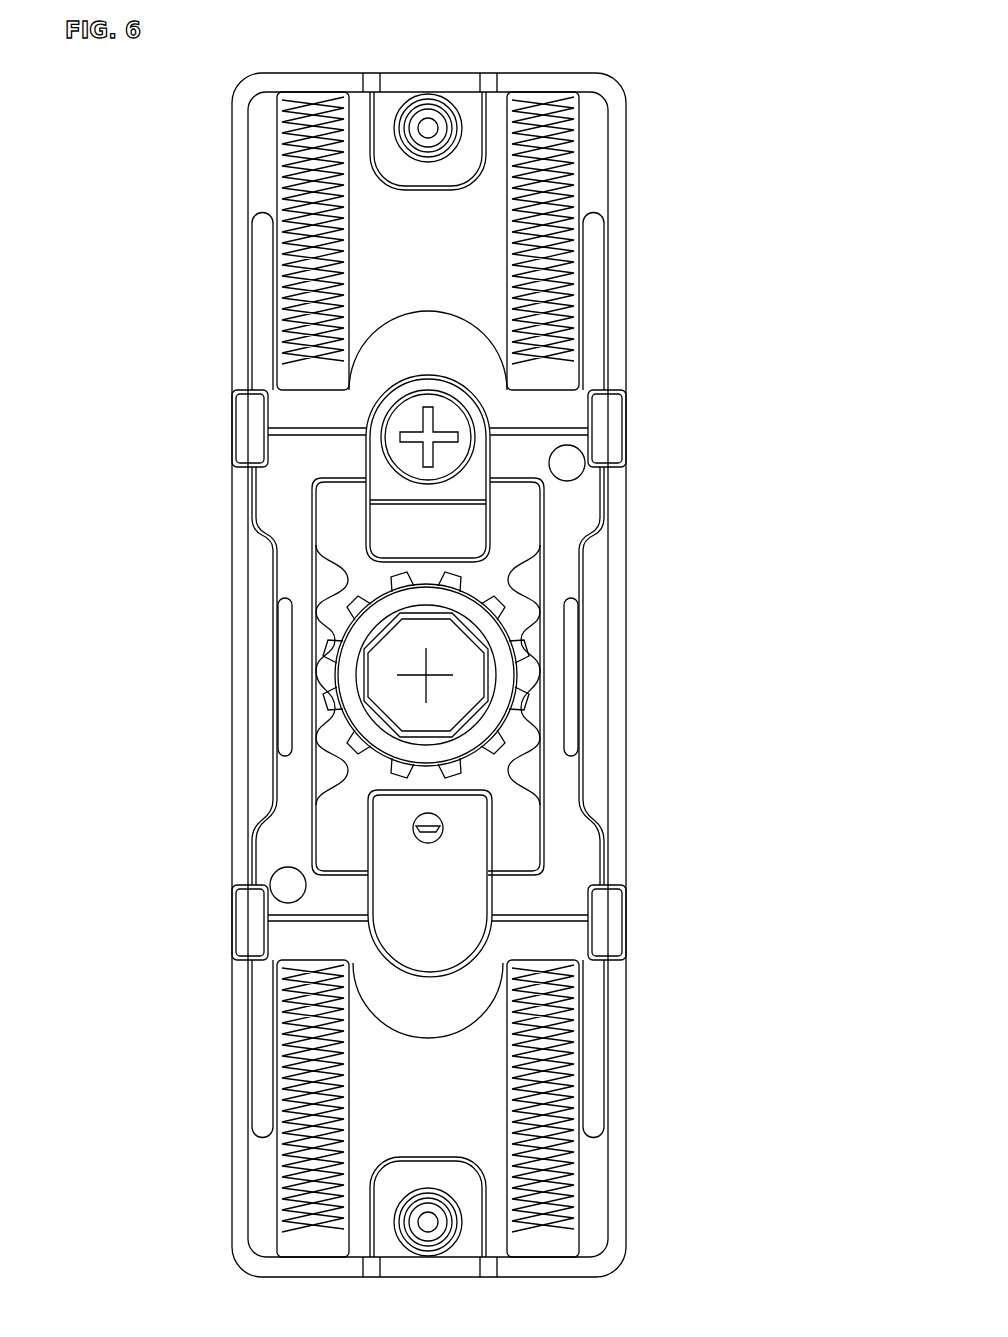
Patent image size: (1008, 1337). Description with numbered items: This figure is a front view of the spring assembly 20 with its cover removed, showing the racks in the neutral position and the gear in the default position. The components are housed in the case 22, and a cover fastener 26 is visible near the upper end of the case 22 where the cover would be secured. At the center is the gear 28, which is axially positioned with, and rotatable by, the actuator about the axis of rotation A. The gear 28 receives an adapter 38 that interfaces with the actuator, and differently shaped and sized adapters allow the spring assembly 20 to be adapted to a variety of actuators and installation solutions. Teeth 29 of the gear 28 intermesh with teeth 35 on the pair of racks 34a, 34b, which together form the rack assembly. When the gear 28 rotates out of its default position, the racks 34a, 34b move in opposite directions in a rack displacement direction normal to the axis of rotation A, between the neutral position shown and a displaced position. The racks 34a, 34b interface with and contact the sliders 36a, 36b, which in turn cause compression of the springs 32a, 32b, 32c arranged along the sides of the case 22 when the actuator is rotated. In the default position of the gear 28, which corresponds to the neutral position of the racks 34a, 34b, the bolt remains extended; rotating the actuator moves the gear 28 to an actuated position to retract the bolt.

The spring assembly 20 is at (748, 50).
The case 22 is at (583, 75).
The cover fastener 26 is at (403, 461).
The gear 28 is at (462, 628).
The teeth 29 is at (462, 592).
The spring 32a is at (282, 195).
The spring 32b is at (558, 188).
The spring 32c is at (306, 1115).
The rack 34a is at (293, 806).
The rack 34b is at (566, 782).
The teeth 35 is at (334, 727).
The slider 36a is at (590, 322).
The slider 36b is at (585, 1022).
The adapter 38 is at (467, 715).
The axis of rotation A is at (420, 668).